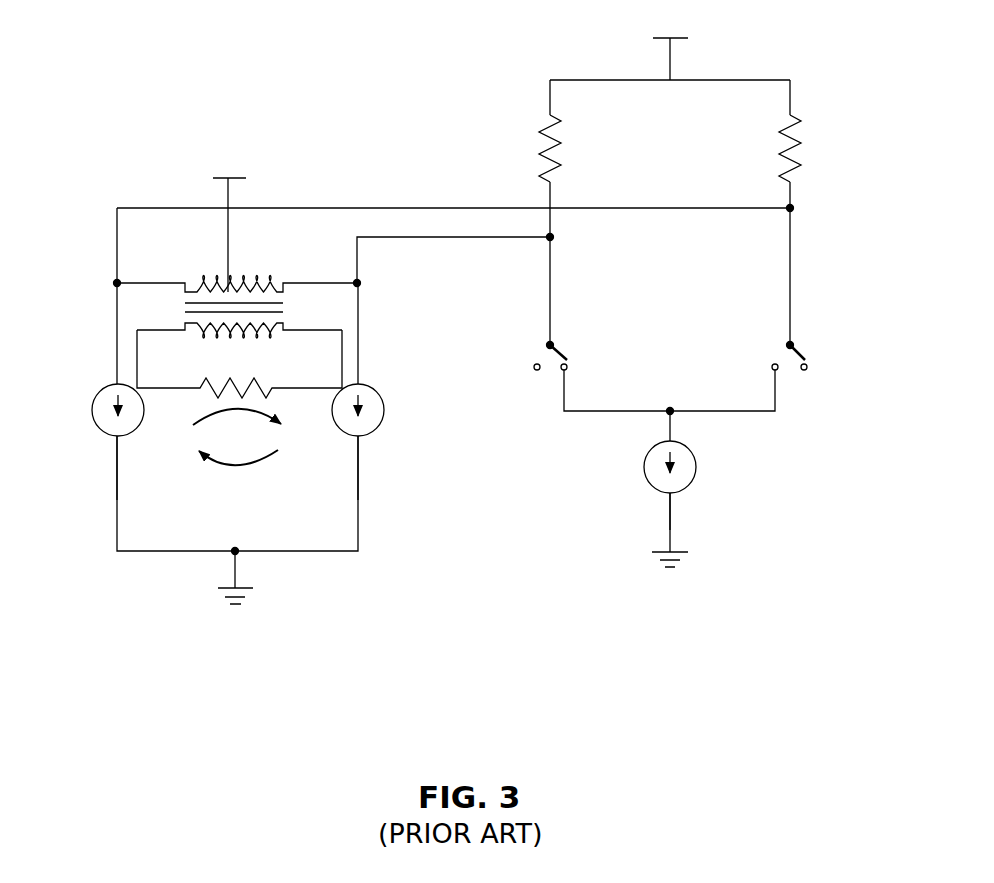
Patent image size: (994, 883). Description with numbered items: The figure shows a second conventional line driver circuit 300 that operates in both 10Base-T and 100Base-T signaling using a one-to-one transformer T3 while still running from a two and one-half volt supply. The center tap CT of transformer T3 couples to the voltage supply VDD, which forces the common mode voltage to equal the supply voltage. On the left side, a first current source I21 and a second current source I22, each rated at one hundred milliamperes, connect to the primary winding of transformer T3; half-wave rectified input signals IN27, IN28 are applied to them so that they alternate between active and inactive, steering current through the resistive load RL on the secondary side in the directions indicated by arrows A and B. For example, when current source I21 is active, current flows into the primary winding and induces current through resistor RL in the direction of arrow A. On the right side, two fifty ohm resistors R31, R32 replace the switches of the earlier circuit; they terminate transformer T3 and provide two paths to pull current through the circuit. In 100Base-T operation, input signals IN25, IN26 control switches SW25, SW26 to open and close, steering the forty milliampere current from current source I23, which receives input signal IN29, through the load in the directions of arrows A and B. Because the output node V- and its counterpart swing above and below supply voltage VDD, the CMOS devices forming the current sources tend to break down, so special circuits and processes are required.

The line driver circuit 300 is at (466, 340).
The transformer T3 is at (153, 283).
The center tap CT is at (229, 277).
The resistive load RL is at (239, 364).
The current source I21 is at (100, 385).
The current source I22 is at (372, 385).
The current source I23 is at (697, 468).
The input signal IN25 is at (538, 356).
The input signal IN26 is at (807, 340).
The input signal IN27 is at (93, 442).
The input signal IN28 is at (383, 442).
The input signal IN29 is at (646, 494).
The resistor R31 is at (545, 150).
The resistor R32 is at (783, 150).
The switch SW25 is at (570, 356).
The switch SW26 is at (808, 356).
The arrow A is at (200, 421).
The arrow B is at (278, 452).
The supply voltage VDD is at (446, 91).
The output node V- is at (574, 234).